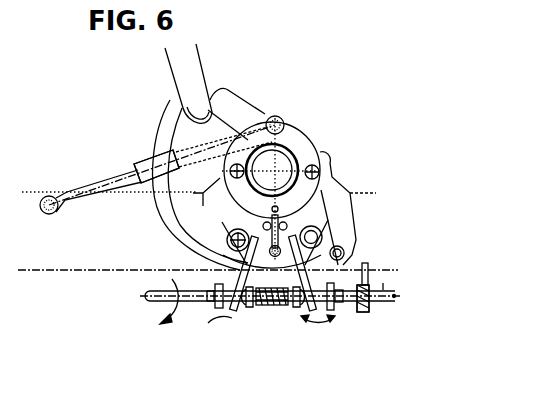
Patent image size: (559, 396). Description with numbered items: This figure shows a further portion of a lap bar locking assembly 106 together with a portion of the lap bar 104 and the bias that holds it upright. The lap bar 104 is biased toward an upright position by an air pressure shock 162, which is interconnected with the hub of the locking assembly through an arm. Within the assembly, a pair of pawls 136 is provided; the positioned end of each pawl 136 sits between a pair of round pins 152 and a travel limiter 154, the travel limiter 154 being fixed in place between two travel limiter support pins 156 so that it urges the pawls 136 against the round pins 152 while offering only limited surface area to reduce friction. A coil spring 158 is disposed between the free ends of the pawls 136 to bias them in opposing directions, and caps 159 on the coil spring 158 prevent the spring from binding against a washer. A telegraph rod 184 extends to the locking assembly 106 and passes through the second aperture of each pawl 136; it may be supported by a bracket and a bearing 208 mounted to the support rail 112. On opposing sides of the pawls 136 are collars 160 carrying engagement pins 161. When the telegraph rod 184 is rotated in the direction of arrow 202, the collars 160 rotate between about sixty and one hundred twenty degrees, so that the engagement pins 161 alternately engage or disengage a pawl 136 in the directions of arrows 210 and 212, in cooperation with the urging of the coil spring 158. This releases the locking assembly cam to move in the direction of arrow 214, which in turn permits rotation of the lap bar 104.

The lap bar 104 is at (196, 84).
The lap bar locking assembly 106 is at (238, 123).
The support rail 112 is at (24, 203).
The pawl 136 is at (322, 265).
The round pin 152 is at (232, 241).
The travel limiter 154 is at (282, 238).
The travel limiter support pin 156 is at (264, 224).
The coil spring 158 is at (278, 309).
The cap 159 is at (248, 309).
The collar 160 is at (232, 318).
The engagement pin 161 is at (218, 284).
The air pressure shock 162 is at (144, 160).
The telegraph rod 184 is at (386, 293).
The arrow 202 is at (178, 326).
The bearing 208 is at (362, 310).
The arrow 210 is at (222, 322).
The arrow 212 is at (318, 321).
The arrow 214 is at (166, 242).